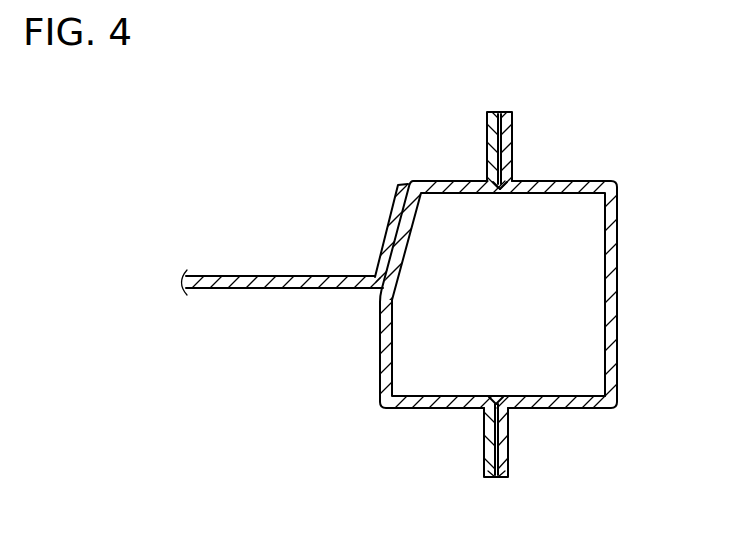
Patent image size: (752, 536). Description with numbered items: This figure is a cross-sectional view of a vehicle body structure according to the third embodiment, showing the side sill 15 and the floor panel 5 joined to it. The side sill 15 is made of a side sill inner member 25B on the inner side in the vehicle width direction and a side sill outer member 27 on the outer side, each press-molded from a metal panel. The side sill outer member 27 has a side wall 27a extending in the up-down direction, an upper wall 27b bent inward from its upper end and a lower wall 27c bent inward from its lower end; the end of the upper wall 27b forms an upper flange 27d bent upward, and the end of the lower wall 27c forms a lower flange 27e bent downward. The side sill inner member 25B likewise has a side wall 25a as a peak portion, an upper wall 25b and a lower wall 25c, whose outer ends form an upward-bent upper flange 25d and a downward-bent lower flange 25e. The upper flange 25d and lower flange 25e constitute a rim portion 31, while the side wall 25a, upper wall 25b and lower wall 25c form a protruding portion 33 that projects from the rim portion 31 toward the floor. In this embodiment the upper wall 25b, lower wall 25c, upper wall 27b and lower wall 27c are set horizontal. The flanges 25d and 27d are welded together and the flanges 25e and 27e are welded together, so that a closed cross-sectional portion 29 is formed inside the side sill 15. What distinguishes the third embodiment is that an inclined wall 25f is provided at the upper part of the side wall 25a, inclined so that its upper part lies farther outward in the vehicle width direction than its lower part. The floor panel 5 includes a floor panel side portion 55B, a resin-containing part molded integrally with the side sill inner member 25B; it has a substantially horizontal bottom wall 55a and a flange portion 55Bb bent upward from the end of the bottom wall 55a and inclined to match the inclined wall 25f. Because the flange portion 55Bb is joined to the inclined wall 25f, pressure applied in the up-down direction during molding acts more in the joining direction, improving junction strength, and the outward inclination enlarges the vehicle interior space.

The side sill 15 is at (617, 182).
The side sill outer member 27 is at (618, 342).
The side wall 27a is at (618, 282).
The upper wall 27b is at (563, 187).
The lower wall 27c is at (560, 402).
The upper flange 27d is at (507, 152).
The lower flange 27e is at (503, 452).
The closed cross-sectional portion 29 is at (517, 299).
The side sill inner member 25B is at (378, 368).
The side wall 25a is at (378, 342).
The upper wall 25b is at (457, 188).
The lower wall 25c is at (417, 402).
The upper flange 25d is at (490, 152).
The lower flange 25e is at (492, 452).
The inclined wall 25f is at (388, 213).
The rim portion 31 is at (448, 290).
The protruding portion 33 is at (376, 287).
The floor panel side portion 55B is at (217, 290).
The floor panel 5 is at (260, 260).
The bottom wall 55a is at (227, 277).
The flange portion 55Bb is at (382, 252).